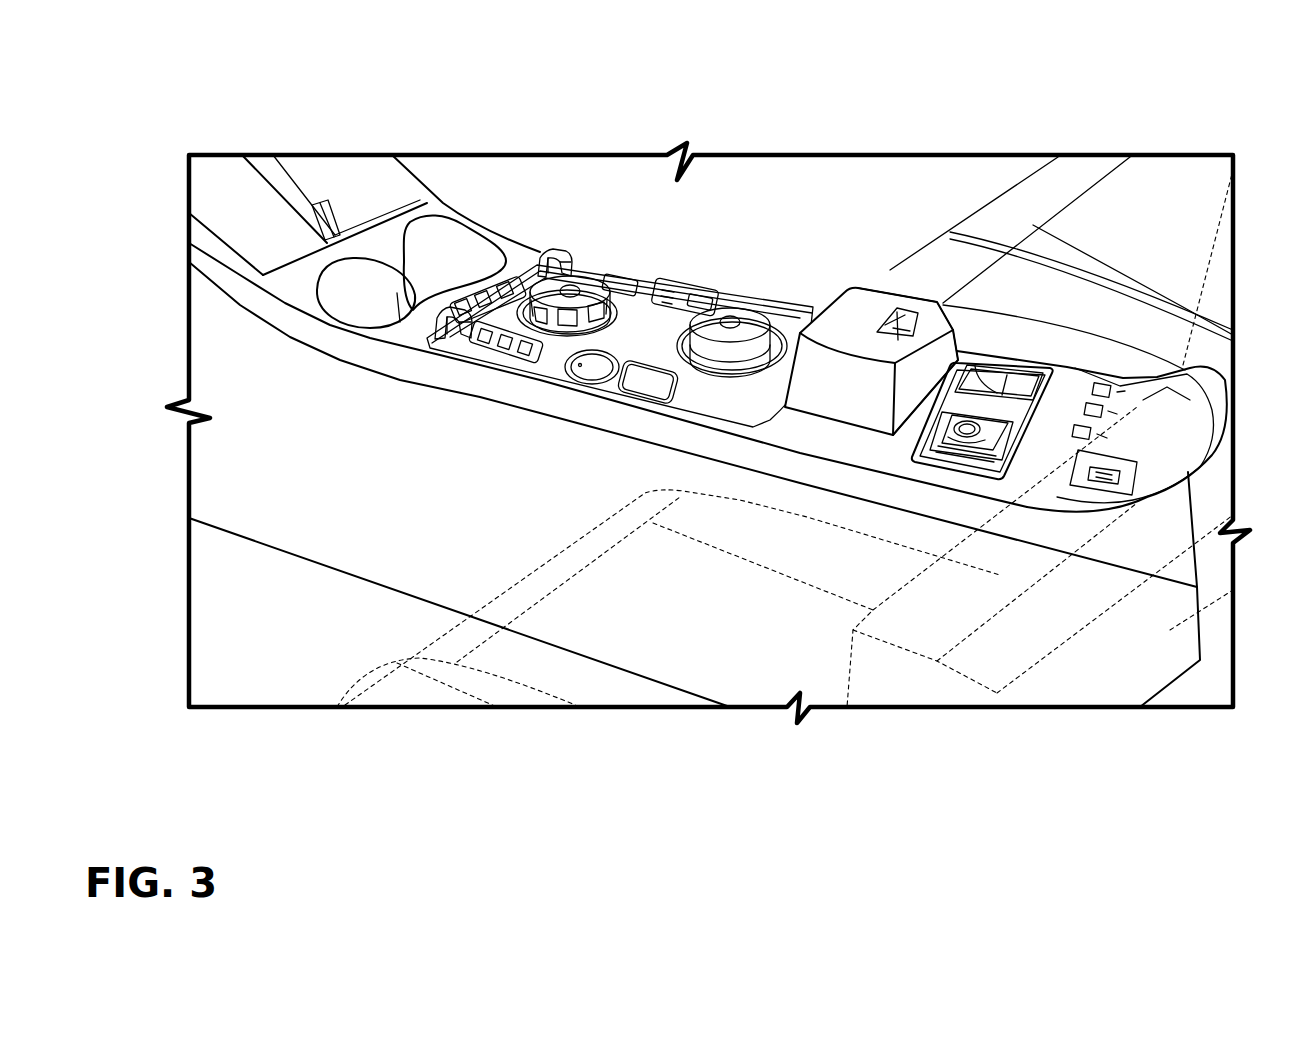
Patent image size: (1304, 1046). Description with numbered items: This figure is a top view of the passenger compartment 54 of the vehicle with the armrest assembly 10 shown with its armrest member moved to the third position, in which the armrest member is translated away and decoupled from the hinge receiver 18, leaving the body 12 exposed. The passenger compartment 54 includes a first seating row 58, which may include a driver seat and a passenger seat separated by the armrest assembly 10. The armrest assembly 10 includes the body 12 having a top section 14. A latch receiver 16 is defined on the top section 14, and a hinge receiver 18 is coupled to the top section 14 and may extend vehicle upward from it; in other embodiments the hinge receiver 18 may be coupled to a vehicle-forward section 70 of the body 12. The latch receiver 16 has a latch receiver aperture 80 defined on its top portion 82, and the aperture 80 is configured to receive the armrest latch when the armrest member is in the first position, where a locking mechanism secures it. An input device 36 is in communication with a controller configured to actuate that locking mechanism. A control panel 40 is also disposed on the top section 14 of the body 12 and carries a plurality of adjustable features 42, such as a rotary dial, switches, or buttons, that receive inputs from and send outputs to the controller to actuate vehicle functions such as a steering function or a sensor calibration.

The vehicle armrest assembly 10 is at (767, 269).
The body 12 is at (330, 505).
The top section 14 is at (403, 340).
The latch receiver 16 is at (912, 302).
The hinge receiver 18 is at (550, 253).
The input device 36 is at (1115, 390).
The control panel 40 is at (590, 290).
The adjustable feature 42 is at (615, 277).
The passenger compartment 54 is at (649, 153).
The first seating row 58 is at (613, 727).
The vehicle-forward section 70 is at (483, 290).
The latch receiver aperture 80 is at (958, 345).
The top portion 82 is at (853, 305).